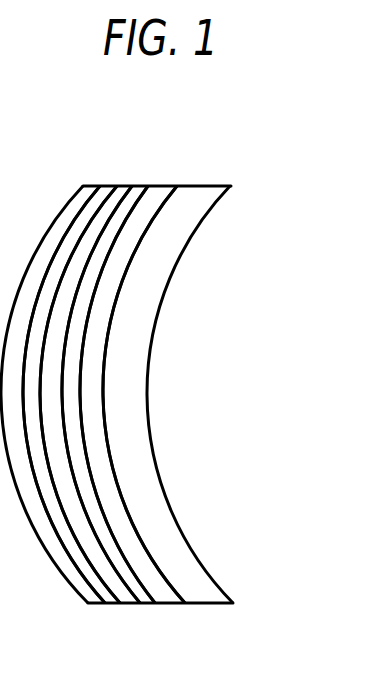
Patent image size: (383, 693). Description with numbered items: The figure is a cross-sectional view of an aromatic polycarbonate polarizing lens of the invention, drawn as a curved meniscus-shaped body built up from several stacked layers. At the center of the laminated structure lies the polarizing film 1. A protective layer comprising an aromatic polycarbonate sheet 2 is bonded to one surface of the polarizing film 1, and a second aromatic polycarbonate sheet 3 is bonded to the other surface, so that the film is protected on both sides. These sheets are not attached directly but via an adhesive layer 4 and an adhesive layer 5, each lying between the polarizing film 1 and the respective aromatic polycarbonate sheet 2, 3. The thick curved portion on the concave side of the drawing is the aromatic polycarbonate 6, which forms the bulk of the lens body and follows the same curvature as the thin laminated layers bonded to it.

The polarizing film 1 is at (132, 186).
The aromatic polycarbonate sheet 2 is at (93, 186).
The aromatic polycarbonate sheet 3 is at (169, 194).
The adhesive layer 4 is at (113, 604).
The adhesive layer 5 is at (152, 604).
The aromatic polycarbonate 6 is at (170, 237).